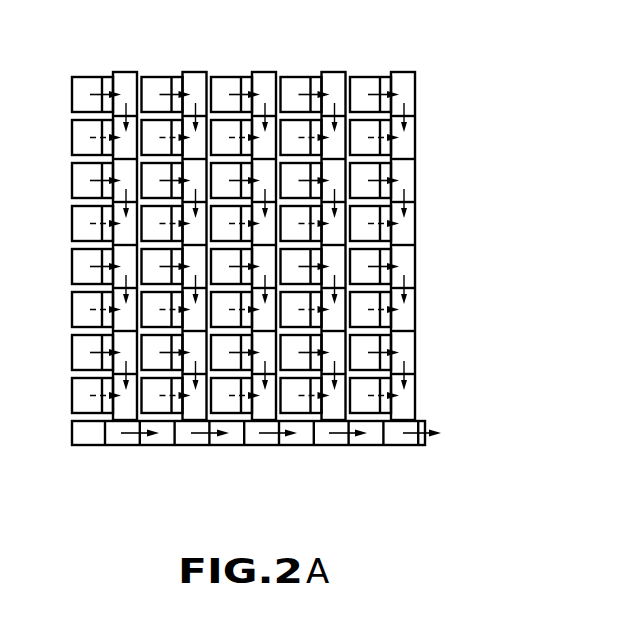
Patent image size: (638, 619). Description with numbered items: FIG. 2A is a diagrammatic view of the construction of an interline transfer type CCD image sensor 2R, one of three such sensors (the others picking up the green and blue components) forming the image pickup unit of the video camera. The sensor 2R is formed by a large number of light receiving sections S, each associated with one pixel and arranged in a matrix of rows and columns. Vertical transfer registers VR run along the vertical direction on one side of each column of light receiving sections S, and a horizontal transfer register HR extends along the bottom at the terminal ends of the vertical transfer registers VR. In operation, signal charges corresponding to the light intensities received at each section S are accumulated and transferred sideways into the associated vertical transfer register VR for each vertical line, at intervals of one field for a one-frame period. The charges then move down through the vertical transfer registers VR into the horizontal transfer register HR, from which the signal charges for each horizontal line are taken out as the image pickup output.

The interline transfer type CCD image sensor 2R is at (297, 253).
The vertical transfer register VR is at (258, 71).
The horizontal transfer register HR is at (257, 430).
The light receiving section S is at (152, 177).